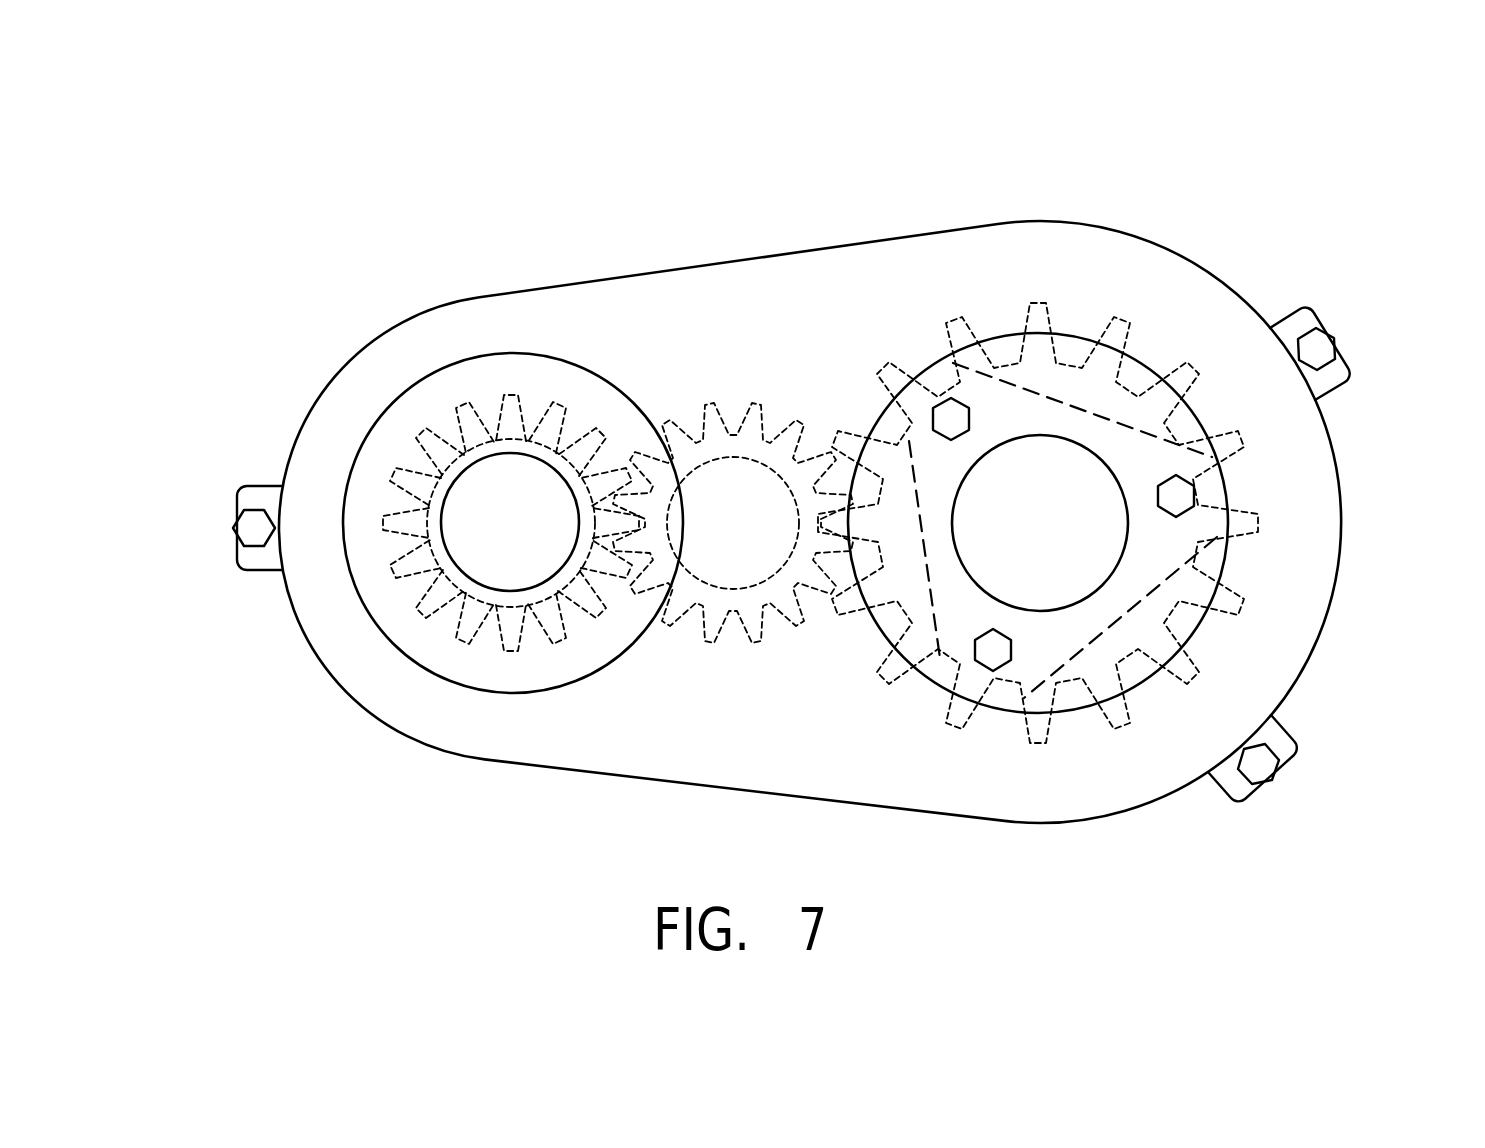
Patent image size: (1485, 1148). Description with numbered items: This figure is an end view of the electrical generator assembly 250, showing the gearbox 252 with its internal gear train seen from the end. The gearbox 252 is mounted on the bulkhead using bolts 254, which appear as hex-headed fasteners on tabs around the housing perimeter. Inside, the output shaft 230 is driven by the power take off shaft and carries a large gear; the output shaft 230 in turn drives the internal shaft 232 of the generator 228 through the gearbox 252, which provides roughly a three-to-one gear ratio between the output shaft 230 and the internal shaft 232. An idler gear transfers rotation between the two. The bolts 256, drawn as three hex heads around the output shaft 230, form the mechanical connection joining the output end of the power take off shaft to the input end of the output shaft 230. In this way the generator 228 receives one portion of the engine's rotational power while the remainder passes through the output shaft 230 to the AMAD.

The electrical generator assembly 250 is at (320, 112).
The gearbox 252 is at (740, 270).
The bolts 254 is at (252, 523).
The generator 228 is at (439, 366).
The internal shaft 232 is at (458, 478).
The output shaft 230 is at (1054, 452).
The bolts 256 is at (947, 416).